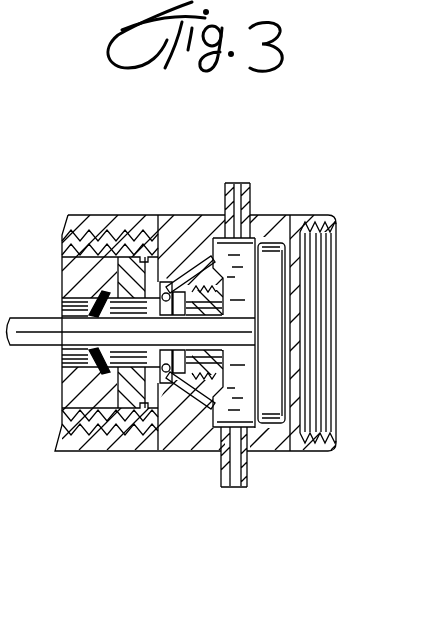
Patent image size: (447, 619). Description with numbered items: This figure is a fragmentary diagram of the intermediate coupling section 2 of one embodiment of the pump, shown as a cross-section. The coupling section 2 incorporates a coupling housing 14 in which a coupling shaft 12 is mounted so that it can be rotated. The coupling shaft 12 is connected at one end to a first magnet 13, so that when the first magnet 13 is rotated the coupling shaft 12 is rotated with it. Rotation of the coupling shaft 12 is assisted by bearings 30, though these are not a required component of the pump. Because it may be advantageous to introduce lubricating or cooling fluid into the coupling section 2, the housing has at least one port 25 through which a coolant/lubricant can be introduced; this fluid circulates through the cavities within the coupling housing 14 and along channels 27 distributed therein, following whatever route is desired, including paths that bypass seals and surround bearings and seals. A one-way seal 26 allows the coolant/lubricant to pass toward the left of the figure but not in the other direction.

The coupling section 2 is at (7, 498).
The coupling shaft 12 is at (193, 270).
The first magnet 13 is at (270, 245).
The coupling housing 14 is at (323, 225).
The port 25 is at (247, 467).
The one-way seal 26 is at (60, 383).
The channels 27 is at (177, 290).
The bearings 30 is at (175, 440).